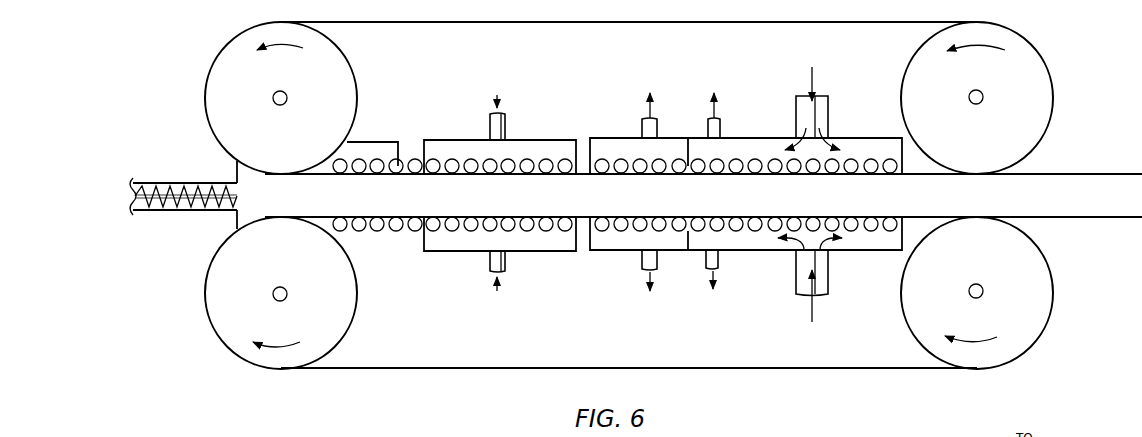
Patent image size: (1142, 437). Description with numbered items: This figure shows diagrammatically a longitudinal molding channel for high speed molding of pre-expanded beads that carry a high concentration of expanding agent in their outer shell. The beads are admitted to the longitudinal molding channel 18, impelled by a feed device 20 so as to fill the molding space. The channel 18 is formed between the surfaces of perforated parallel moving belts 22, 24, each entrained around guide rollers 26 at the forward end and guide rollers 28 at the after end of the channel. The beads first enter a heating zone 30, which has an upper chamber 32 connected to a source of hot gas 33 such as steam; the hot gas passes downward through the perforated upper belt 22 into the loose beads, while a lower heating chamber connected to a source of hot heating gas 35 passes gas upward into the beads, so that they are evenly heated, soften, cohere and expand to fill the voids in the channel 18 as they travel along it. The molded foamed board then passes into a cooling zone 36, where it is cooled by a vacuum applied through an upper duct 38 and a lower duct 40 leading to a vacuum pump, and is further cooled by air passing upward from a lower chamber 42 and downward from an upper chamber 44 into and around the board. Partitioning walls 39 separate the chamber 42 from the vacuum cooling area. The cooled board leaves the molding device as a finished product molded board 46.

The longitudinal molding channel 18 is at (350, 204).
The feed device 20 is at (180, 181).
The perforated moving belt 22 is at (316, 222).
The perforated moving belt 24 is at (323, 171).
The guide rollers 26 is at (333, 108).
The guide rollers 28 is at (1026, 107).
The heating zone 30 is at (512, 204).
The upper chamber 32 is at (495, 158).
The source of hot gas 33 is at (490, 126).
The source of hot heating gas 35 is at (507, 258).
The cooling zone 36 is at (658, 204).
The vacuum duct 38 is at (655, 126).
The partitioning walls 39 is at (689, 237).
The lower vacuum duct 40 is at (655, 263).
The lower chamber 42 is at (828, 264).
The upper chamber 44 is at (830, 121).
The finished product molded board 46 is at (1090, 173).